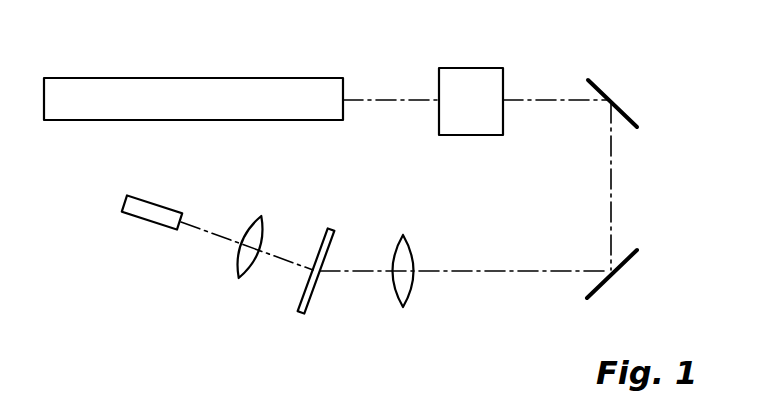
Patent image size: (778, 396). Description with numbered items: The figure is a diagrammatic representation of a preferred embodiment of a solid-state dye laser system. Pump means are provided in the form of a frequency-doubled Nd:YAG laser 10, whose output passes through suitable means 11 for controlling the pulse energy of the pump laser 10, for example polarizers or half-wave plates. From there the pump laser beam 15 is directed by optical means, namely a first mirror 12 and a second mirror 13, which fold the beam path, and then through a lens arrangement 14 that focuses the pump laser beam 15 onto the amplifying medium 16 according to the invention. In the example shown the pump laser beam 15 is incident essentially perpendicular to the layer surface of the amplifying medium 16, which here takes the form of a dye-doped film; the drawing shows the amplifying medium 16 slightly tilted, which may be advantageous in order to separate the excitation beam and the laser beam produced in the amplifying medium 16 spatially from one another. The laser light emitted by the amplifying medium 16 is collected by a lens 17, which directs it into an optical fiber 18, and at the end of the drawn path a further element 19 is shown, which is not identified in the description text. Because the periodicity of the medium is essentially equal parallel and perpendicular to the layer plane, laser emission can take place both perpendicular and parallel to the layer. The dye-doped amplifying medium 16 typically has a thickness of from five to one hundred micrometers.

The Nd:YAG laser 10 is at (178, 95).
The means for controlling the pulse energy 11 is at (468, 87).
The mirror 12 is at (602, 93).
The mirror 13 is at (620, 267).
The lens arrangement 14 is at (406, 284).
The pump laser beam 15 is at (367, 270).
The amplifying medium 16 is at (305, 297).
The lens 17 is at (282, 258).
The optical fiber 18 is at (240, 263).
The detector 19 is at (143, 213).